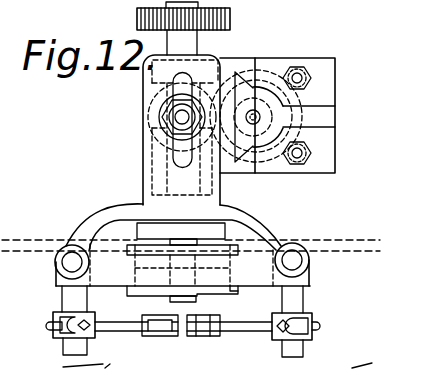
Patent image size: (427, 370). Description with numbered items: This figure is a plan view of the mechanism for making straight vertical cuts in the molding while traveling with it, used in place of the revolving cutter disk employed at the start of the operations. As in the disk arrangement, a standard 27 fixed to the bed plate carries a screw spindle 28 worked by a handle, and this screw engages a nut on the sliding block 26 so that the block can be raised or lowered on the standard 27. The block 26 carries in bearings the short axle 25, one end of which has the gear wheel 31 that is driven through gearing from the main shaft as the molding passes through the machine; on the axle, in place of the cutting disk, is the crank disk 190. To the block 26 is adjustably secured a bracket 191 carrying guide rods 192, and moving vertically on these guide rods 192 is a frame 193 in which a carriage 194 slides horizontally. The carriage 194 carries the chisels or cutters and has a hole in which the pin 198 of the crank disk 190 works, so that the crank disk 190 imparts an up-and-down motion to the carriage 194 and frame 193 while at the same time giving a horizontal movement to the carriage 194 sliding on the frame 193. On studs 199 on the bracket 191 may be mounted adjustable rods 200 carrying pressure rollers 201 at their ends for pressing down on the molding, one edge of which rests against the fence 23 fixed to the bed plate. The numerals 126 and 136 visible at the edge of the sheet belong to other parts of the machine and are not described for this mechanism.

The fence 23 is at (37, 242).
The axle 25 is at (172, 39).
The sliding block 26 is at (240, 60).
The standard 27 is at (303, 124).
The screw spindle 28 is at (262, 117).
The gear wheel 31 is at (232, 9).
The member 126 is at (93, 5).
The member 136 is at (53, 5).
The crank disk 190 is at (151, 229).
The bracket 191 is at (103, 213).
The guide rods 192 is at (71, 260).
The frame 193 is at (255, 263).
The carriage 194 is at (219, 292).
The pin 198 is at (175, 298).
The studs 199 is at (65, 343).
The adjustable rods 200 is at (125, 333).
The pressure rollers 201 is at (177, 336).